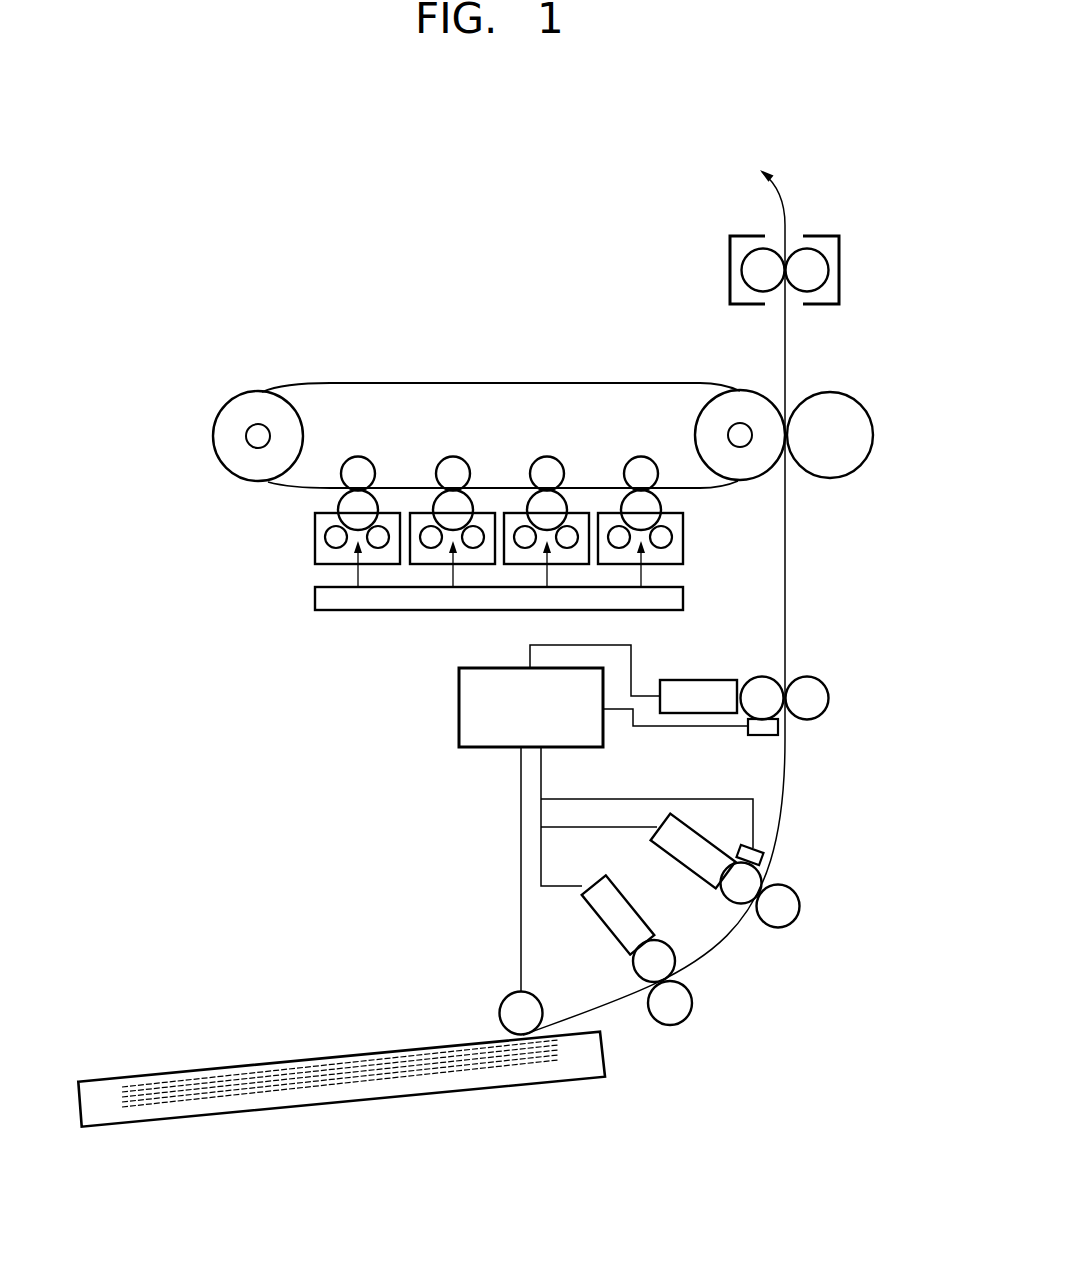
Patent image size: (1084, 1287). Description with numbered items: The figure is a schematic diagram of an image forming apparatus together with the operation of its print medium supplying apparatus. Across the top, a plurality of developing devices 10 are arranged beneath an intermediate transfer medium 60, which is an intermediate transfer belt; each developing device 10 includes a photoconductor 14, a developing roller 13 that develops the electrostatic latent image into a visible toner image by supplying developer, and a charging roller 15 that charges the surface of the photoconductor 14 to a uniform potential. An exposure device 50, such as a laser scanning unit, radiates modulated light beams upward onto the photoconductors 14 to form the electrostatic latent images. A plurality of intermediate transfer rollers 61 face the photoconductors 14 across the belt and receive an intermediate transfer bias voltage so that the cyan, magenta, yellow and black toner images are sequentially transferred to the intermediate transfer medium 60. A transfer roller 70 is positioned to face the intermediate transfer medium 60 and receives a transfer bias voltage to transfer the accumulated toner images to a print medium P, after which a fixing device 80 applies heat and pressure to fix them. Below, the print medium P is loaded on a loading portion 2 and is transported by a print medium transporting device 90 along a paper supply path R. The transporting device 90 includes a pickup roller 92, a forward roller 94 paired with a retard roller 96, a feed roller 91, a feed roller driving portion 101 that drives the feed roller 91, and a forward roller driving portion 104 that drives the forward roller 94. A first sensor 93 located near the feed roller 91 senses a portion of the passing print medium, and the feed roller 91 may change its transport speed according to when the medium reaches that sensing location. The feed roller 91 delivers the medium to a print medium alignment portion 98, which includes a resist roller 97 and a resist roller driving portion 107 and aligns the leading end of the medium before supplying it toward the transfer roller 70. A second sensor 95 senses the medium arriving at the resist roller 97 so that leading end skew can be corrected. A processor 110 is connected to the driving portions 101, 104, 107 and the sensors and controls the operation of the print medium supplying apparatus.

The loading portion 2 is at (341, 1077).
The developing device 10 is at (447, 576).
The developing roller 13 is at (326, 546).
The photoconductor 14 is at (337, 505).
The charging roller 15 is at (381, 549).
The exposure device 50 is at (417, 611).
The intermediate transfer medium 60 is at (230, 400).
The intermediate transfer rollers 61 is at (658, 453).
The transfer roller 70 is at (848, 399).
The fixing device 80 is at (842, 252).
The print medium transporting device 90 is at (713, 982).
The feed roller 91 is at (727, 899).
The pickup roller 92 is at (507, 996).
The first sensor 93 is at (760, 852).
The forward roller 94 is at (633, 972).
The second sensor 95 is at (766, 736).
The retard roller 96 is at (668, 1026).
The resist roller 97 is at (763, 674).
The print medium alignment portion 98 is at (840, 677).
The feed roller driving portion 101 is at (680, 866).
The forward roller driving portion 104 is at (602, 927).
The resist roller driving portion 107 is at (697, 690).
The processor 110 is at (459, 716).
The print medium P is at (213, 1075).
The paper supply path R is at (785, 560).